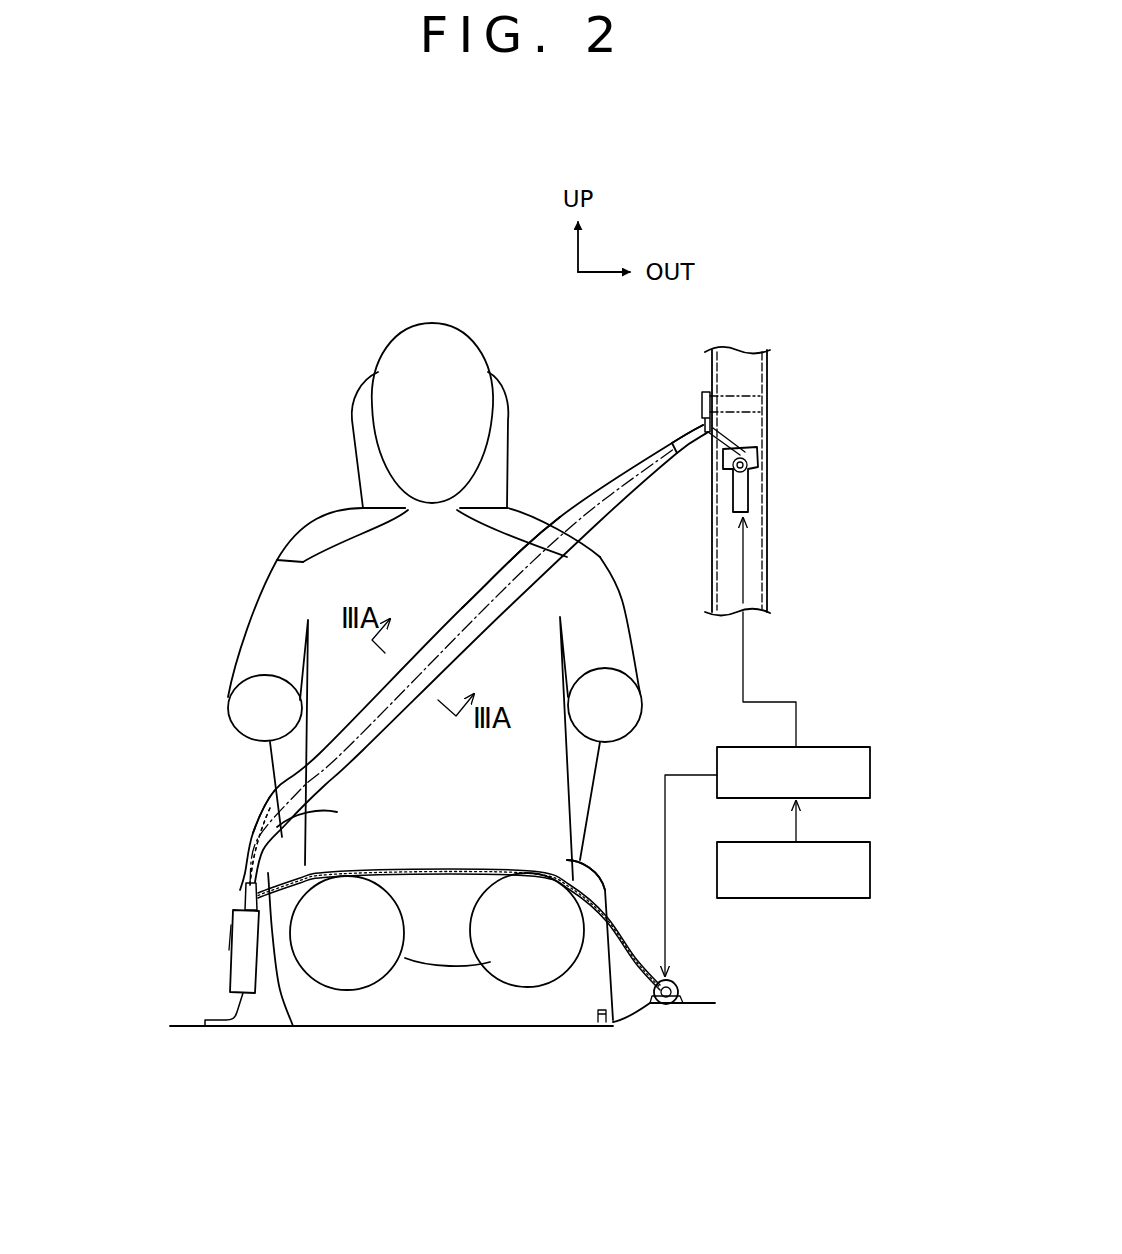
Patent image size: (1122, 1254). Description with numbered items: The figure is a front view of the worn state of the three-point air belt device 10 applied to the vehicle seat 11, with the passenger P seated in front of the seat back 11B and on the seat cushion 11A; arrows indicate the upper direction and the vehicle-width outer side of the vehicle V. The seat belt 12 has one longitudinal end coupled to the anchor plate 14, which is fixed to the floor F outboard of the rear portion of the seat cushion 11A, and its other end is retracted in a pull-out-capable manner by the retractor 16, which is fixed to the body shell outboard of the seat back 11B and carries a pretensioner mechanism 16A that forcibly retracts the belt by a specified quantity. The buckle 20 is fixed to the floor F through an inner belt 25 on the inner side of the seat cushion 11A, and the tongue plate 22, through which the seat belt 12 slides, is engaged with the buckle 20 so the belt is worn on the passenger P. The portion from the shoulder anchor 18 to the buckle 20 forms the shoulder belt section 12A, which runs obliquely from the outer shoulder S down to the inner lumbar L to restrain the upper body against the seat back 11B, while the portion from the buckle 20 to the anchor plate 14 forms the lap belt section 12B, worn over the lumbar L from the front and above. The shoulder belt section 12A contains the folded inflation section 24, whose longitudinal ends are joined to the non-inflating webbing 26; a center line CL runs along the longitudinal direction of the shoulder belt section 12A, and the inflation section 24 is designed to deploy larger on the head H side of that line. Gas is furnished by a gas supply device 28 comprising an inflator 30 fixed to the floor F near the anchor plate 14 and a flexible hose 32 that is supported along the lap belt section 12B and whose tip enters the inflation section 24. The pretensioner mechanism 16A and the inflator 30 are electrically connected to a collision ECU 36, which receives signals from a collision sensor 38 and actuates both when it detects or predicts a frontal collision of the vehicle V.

The air belt device 10 is at (618, 393).
The vehicle seat 11 is at (599, 789).
The seat cushion 11A is at (590, 870).
The seat back 11B is at (545, 517).
The seat belt 12 is at (474, 707).
The shoulder belt section 12A is at (388, 734).
The lap belt section 12B is at (411, 862).
The anchor plate 14 is at (598, 1014).
The retractor 16 is at (792, 525).
The pretensioner mechanism 16A is at (746, 504).
The shoulder anchor 18 is at (703, 440).
The buckle 20 is at (237, 952).
The tongue plate 22 is at (241, 905).
The inflation section 24 is at (510, 613).
The inner belt 25 is at (228, 1005).
The webbing 26 is at (700, 421).
The gas supply device 28 is at (662, 1047).
The inflator 30 is at (676, 1025).
The flexible hose 32 is at (265, 845).
The collision ECU 36 is at (836, 747).
The collision sensor 38 is at (836, 898).
The head H is at (445, 333).
The shoulder S is at (506, 507).
The passenger P is at (629, 594).
The vehicle V is at (774, 363).
The lumbar L is at (263, 820).
The floor F is at (195, 1022).
The center line CL is at (462, 665).